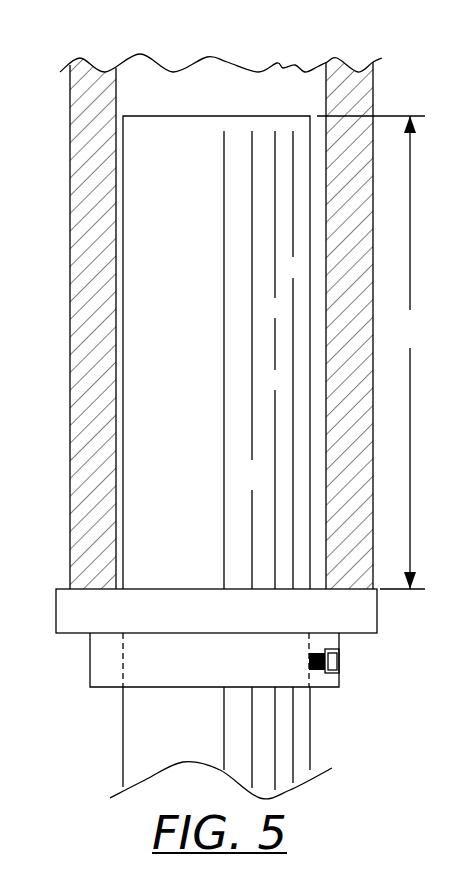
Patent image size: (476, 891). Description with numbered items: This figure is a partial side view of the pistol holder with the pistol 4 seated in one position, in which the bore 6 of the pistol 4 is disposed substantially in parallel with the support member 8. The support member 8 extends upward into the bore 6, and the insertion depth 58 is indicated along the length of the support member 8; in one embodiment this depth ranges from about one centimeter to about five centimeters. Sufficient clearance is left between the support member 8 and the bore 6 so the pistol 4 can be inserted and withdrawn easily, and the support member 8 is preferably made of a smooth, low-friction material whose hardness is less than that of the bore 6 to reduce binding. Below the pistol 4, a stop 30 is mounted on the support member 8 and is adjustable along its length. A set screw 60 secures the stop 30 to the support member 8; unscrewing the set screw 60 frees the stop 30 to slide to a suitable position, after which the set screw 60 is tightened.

The pistol 4 is at (69, 508).
The bore 6 is at (325, 107).
The support member 8 is at (123, 740).
The stop 30 is at (377, 607).
The insertion depth 58 is at (425, 340).
The set screw 60 is at (340, 660).